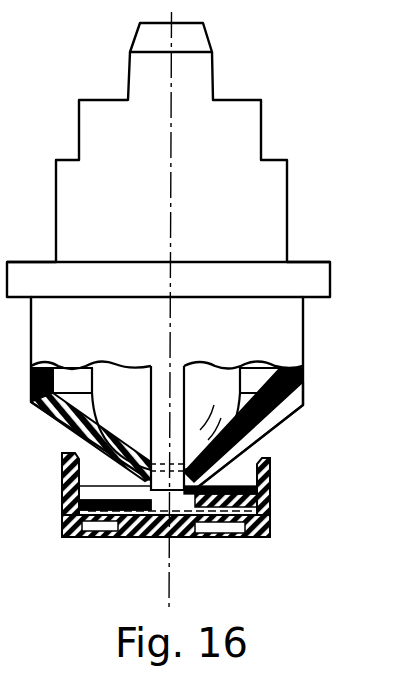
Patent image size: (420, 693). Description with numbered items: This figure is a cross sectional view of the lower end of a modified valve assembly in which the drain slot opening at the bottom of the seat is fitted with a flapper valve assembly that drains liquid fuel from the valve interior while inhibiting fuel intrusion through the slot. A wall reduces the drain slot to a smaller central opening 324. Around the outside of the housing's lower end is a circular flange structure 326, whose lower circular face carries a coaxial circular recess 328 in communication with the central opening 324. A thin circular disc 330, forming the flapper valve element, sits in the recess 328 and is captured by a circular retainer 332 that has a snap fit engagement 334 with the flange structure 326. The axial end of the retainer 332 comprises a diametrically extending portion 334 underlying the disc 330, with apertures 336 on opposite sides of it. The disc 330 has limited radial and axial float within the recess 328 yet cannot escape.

The central opening 324 is at (178, 500).
The circular flange structure 326 is at (255, 500).
The circular recess 328 is at (232, 530).
The thin circular disc 330 is at (120, 512).
The circular retainer 332 is at (270, 522).
The diametrically extending portion 334 is at (62, 456).
The apertures 336 is at (88, 532).